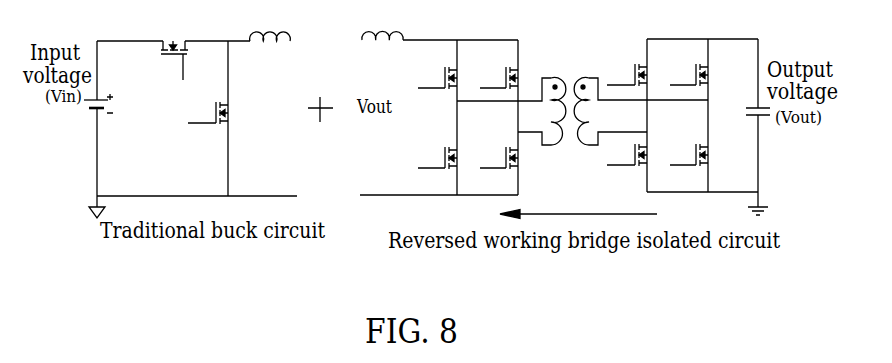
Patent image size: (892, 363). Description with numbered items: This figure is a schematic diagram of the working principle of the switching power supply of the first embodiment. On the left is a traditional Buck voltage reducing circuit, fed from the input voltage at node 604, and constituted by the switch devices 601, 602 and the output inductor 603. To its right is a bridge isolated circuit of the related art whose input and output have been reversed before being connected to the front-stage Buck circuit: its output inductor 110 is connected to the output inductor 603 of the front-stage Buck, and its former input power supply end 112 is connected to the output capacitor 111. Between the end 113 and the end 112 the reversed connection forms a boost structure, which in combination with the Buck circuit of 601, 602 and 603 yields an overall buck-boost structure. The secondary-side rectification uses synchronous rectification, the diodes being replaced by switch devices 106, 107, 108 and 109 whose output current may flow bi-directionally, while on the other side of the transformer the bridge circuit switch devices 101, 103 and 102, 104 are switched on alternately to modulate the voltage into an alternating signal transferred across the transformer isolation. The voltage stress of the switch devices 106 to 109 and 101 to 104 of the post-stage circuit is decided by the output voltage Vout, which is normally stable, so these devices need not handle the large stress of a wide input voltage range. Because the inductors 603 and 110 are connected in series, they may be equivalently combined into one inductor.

The input voltage node of traditional buck circuit 604 is at (125, 28).
The switch device of front-stage Buck circuit 601 is at (166, 66).
The switch device of front-stage Buck circuit 602 is at (201, 128).
The output inductor of front-stage Buck 603 is at (270, 51).
The end 113 is at (369, 41).
The output inductor 110 is at (382, 49).
The switch device 106 is at (430, 71).
The switch device 109 is at (495, 71).
The switch device 107 is at (430, 154).
The switch device 108 is at (494, 156).
The bridge circuit switch device 101 is at (625, 75).
The bridge circuit switch device 104 is at (687, 75).
The bridge circuit switch device 102 is at (625, 153).
The bridge circuit switch device 103 is at (687, 153).
The output capacitor 111 is at (747, 123).
The input power supply end 112 is at (704, 27).